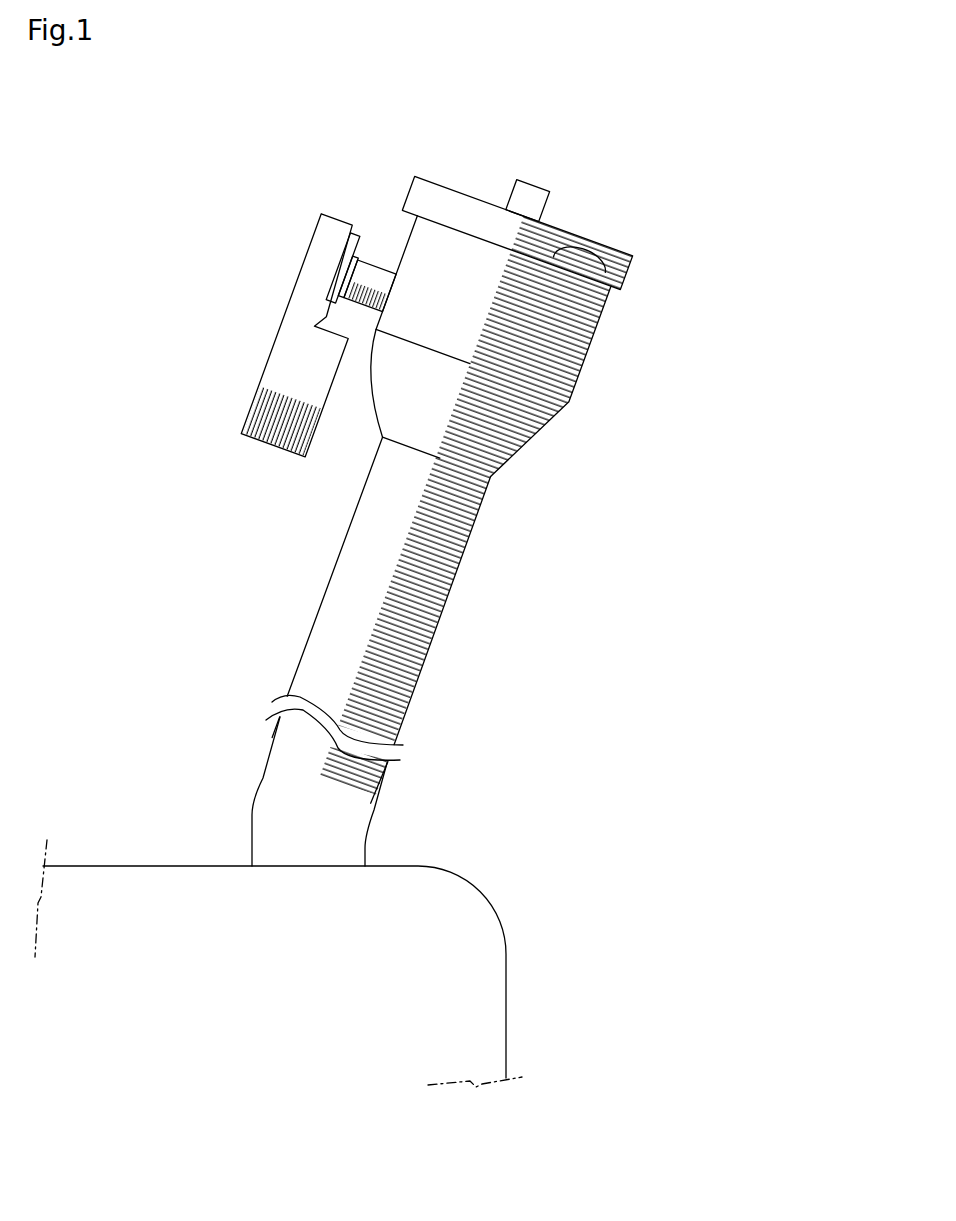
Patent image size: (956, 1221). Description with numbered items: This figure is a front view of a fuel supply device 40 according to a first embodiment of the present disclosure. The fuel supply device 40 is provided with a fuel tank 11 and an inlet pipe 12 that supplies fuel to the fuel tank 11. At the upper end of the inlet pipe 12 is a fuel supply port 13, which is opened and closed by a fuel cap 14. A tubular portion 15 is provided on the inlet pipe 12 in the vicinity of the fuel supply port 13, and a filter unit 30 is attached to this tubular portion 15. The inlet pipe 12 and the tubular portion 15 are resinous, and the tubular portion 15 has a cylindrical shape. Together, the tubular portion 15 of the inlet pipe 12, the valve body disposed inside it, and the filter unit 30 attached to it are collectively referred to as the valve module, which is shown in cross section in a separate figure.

The fuel tank 11 is at (127, 890).
The inlet pipe 12 is at (380, 621).
The fuel supply port 13 is at (517, 232).
The fuel cap 14 is at (581, 257).
The tubular portion 15 is at (372, 278).
The filter unit 30 is at (258, 348).
The fuel supply device 40 is at (258, 158).